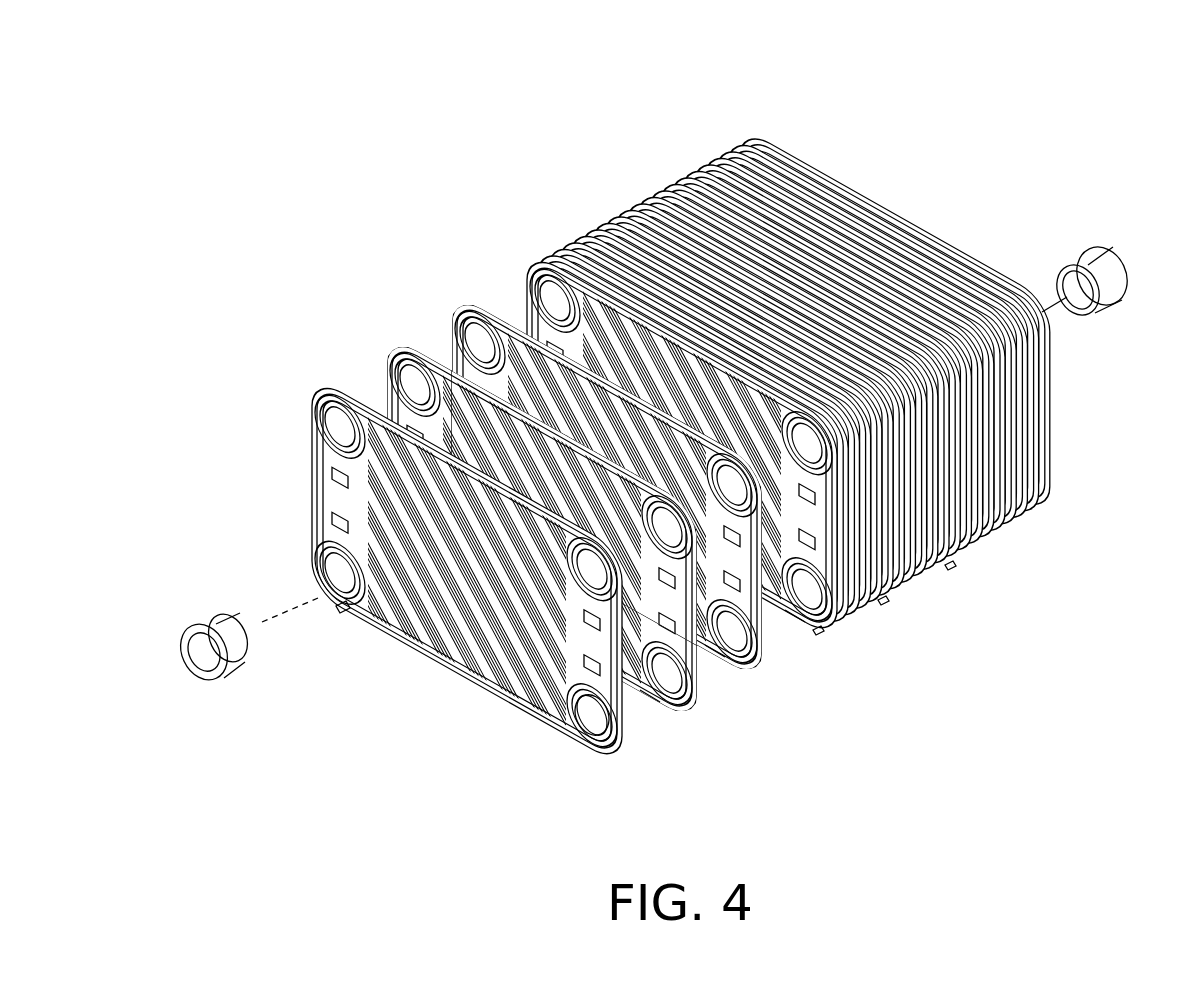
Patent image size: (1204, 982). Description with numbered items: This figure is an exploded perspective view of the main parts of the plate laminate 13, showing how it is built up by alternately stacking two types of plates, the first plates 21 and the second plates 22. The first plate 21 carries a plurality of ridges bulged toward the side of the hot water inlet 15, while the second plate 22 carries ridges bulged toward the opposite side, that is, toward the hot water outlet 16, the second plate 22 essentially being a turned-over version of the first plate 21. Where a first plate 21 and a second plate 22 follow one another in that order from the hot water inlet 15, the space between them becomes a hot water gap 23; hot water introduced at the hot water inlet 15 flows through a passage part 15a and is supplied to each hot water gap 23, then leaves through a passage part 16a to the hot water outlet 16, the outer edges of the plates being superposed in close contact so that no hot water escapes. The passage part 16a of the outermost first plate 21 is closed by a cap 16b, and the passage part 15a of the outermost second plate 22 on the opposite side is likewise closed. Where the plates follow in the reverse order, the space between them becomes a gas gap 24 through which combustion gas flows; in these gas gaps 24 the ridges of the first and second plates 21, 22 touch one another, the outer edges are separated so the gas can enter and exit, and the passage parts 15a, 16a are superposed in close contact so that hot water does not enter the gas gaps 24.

The plate laminate 13 is at (606, 446).
The hot water inlet 15 is at (222, 684).
The passage part 15a is at (342, 612).
The hot water outlet 16 is at (1110, 305).
The passage part 16a is at (950, 568).
The cap 16b is at (588, 592).
The first plate 21 is at (453, 320).
The second plate 22 is at (790, 155).
The hot water gap 23 is at (648, 730).
The gas gap 24 is at (713, 692).